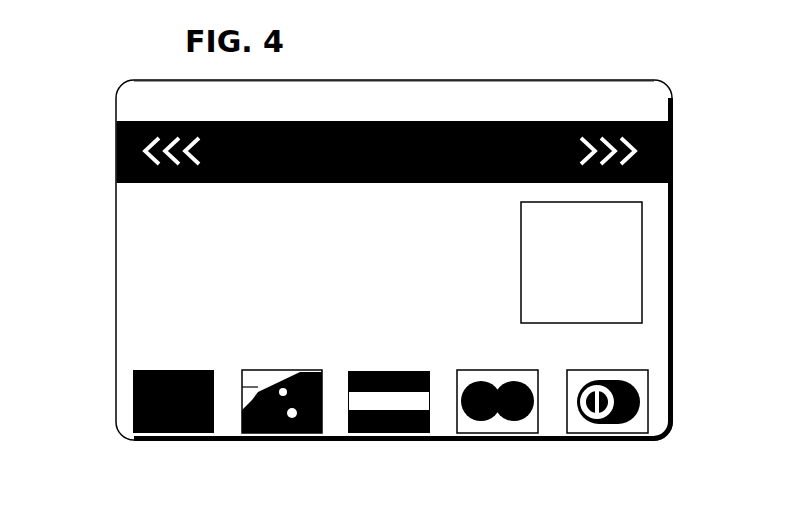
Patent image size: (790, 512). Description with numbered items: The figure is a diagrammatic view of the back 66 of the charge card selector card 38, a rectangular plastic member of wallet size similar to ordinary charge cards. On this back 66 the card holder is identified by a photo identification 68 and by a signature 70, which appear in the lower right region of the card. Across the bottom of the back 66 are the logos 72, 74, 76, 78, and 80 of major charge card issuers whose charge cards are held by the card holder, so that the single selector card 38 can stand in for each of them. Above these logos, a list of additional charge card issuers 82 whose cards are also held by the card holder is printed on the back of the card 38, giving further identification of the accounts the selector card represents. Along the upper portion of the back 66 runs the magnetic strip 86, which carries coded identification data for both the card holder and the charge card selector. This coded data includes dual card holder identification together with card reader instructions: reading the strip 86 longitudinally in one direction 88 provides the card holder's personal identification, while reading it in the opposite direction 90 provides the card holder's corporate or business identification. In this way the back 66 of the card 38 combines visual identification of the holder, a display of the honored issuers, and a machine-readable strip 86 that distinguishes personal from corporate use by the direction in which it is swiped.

The charge card selector card 38 is at (114, 372).
The back 66 is at (423, 254).
The photo identification 68 is at (642, 228).
The signature 70 is at (640, 341).
The logo 72 is at (190, 445).
The logo 74 is at (295, 445).
The logo 76 is at (407, 446).
The logo 78 is at (513, 446).
The logo 80 is at (625, 446).
The additional charge card issuers 82 is at (137, 270).
The magnetic strip 86 is at (640, 120).
The one direction 88 is at (442, 154).
The opposite direction 90 is at (296, 160).